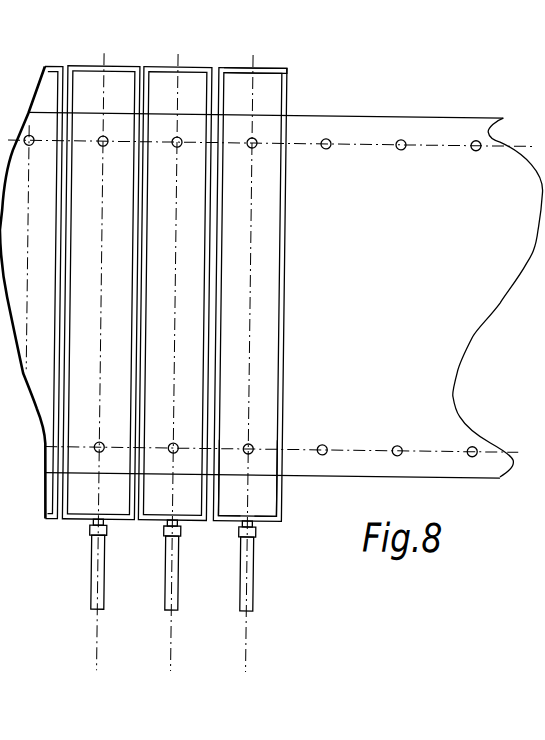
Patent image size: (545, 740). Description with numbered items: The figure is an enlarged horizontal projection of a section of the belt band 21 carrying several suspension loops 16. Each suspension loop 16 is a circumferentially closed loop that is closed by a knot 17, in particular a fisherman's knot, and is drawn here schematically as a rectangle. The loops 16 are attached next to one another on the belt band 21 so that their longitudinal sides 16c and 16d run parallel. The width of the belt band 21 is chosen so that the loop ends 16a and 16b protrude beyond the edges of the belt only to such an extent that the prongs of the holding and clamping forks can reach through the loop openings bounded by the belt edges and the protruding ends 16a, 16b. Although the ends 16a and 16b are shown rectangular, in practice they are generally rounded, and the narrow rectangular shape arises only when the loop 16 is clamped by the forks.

The suspension loop 16 is at (280, 338).
The loop end 16a is at (267, 72).
The loop end 16b is at (261, 521).
The longitudinal side 16c is at (281, 495).
The longitudinal side 16d is at (226, 494).
The knot 17 is at (168, 534).
The belt band 21 is at (472, 314).